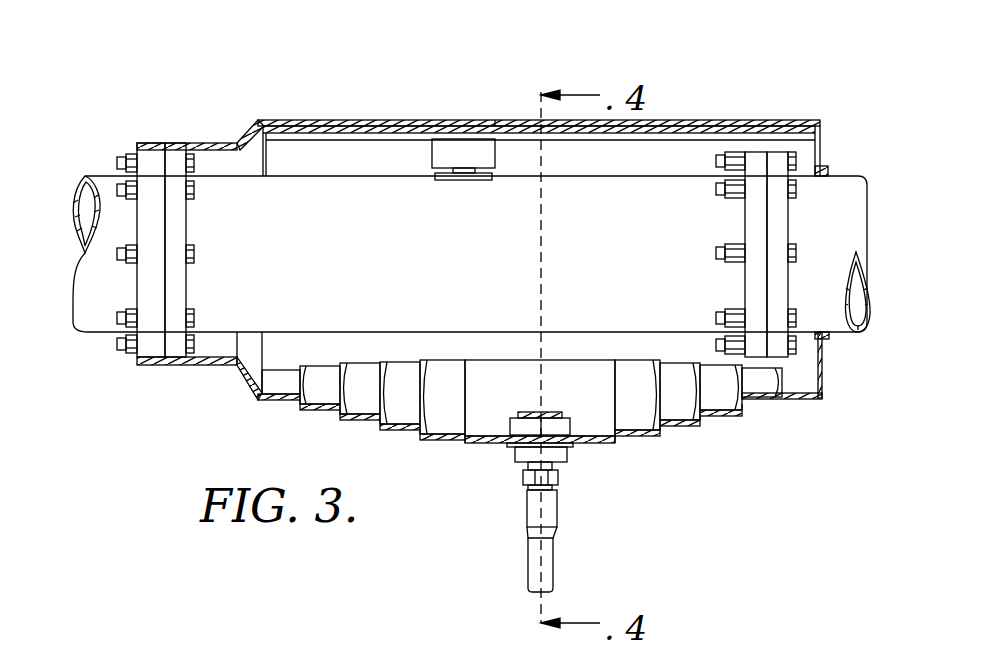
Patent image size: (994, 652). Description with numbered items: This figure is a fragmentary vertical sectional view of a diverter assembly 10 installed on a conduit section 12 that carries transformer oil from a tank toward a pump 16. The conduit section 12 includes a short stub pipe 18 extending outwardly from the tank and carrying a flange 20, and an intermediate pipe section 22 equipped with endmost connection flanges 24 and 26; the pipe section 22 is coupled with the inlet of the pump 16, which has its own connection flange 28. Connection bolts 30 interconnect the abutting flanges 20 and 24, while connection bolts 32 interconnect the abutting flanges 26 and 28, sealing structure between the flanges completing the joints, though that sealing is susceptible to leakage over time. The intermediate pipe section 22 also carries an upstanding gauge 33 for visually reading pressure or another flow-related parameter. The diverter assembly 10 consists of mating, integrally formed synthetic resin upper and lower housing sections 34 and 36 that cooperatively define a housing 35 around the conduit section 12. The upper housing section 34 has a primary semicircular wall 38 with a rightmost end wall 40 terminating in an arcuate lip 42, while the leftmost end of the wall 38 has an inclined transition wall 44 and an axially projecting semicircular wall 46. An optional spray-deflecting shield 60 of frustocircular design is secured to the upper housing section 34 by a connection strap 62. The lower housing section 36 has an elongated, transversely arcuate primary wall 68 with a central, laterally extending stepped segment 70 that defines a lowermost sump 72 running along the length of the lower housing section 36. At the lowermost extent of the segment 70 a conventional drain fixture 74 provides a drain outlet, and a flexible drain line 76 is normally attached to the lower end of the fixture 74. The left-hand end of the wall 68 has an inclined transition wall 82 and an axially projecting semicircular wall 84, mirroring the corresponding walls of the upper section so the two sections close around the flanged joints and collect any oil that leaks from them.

The diverter assembly 10 is at (186, 79).
The conduit section 12 is at (851, 342).
The pump 16 is at (86, 205).
The stub pipe 18 is at (846, 263).
The flange 20 is at (780, 236).
The intermediate pipe section 22 is at (580, 200).
The connection flange 24 is at (752, 285).
The connection flange 26 is at (180, 222).
The connection flange 28 is at (150, 302).
The connection bolts 30 is at (740, 251).
The connection bolts 32 is at (192, 256).
The gauge 33 is at (432, 153).
The upper housing section 34 is at (765, 114).
The housing 35 is at (416, 102).
The lower housing section 36 is at (754, 418).
The primary semicircular wall 38 is at (703, 122).
The end wall 40 is at (822, 136).
The arcuate lip 42 is at (828, 170).
The inclined transition wall 44 is at (247, 131).
The semicircular wall 46 is at (150, 143).
The spray-deflecting shield 60 is at (497, 120).
The connection strap 62 is at (368, 140).
The primary wall 68 is at (440, 350).
The stepped segment 70 is at (672, 442).
The sump 72 is at (590, 415).
The drain fixture 74 is at (518, 449).
The flexible drain line 76 is at (553, 570).
The inclined transition wall 82 is at (240, 380).
The semicircular wall 84 is at (150, 365).